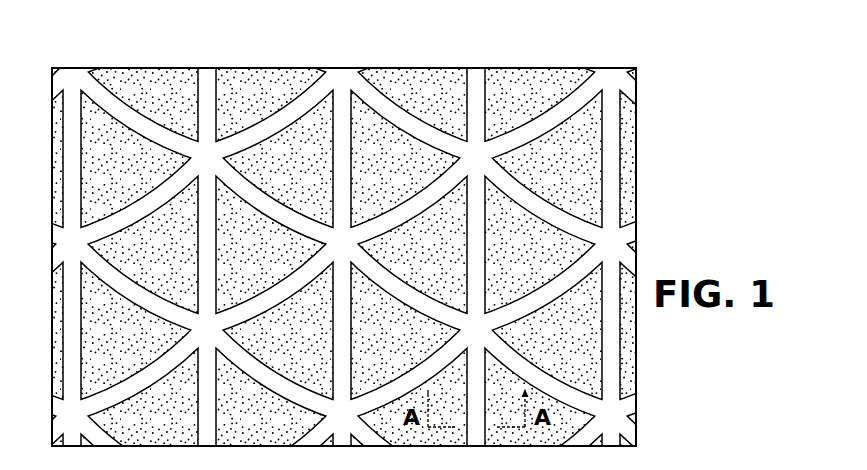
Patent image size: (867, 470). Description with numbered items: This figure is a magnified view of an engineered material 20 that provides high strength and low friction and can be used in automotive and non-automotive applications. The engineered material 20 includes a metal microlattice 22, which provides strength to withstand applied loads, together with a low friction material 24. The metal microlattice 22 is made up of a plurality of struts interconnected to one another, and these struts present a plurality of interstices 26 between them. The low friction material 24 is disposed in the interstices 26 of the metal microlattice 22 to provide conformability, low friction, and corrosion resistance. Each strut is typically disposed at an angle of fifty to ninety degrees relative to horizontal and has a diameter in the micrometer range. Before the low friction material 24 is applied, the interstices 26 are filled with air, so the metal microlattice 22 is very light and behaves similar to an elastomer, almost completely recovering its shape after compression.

The engineered material 20 is at (660, 112).
The metal microlattice 22 is at (285, 97).
The low friction material 24 is at (578, 178).
The interstices 26 is at (375, 115).